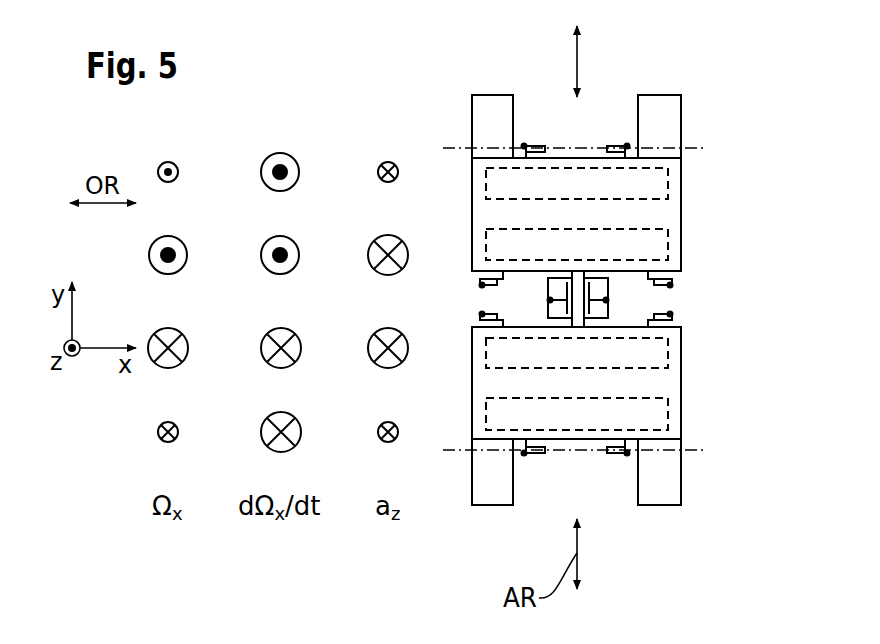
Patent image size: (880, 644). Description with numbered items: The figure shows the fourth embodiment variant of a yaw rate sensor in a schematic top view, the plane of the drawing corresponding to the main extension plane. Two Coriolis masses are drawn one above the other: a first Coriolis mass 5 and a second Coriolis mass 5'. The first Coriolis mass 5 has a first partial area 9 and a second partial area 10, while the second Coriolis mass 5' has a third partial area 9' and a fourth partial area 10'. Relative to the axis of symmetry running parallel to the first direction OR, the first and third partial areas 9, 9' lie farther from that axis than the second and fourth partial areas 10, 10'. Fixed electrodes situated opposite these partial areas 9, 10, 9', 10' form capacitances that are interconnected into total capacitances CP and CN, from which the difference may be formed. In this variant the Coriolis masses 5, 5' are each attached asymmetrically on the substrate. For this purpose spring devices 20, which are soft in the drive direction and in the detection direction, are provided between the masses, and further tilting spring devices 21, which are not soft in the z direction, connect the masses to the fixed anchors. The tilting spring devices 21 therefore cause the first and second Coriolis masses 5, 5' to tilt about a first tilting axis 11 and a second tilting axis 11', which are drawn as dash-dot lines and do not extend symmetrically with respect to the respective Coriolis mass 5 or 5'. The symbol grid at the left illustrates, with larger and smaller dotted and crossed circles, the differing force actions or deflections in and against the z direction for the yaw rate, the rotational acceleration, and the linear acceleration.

The first Coriolis mass 5 is at (576, 176).
The second Coriolis mass 5' is at (576, 423).
The first partial area 9 is at (630, 182).
The second partial area 10 is at (642, 244).
The fourth partial area 10' is at (648, 352).
The third partial area 9' is at (634, 411).
The first tilting axis 11 is at (568, 113).
The second tilting axis 11' is at (566, 487).
The spring devices 20 is at (482, 313).
The tilting spring devices 21 is at (531, 142).